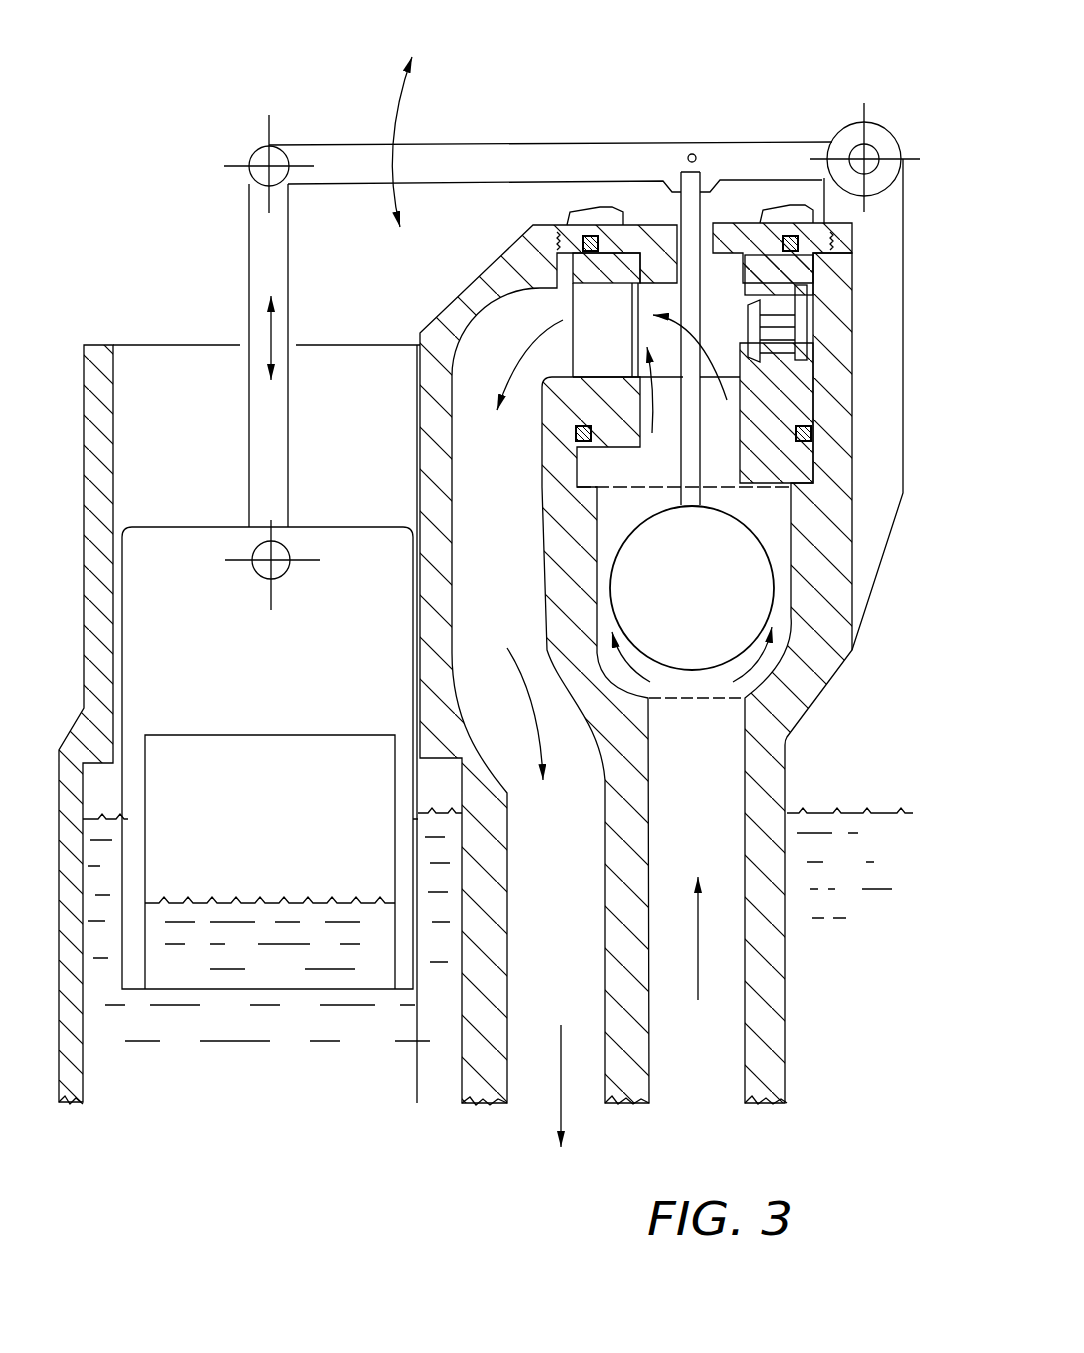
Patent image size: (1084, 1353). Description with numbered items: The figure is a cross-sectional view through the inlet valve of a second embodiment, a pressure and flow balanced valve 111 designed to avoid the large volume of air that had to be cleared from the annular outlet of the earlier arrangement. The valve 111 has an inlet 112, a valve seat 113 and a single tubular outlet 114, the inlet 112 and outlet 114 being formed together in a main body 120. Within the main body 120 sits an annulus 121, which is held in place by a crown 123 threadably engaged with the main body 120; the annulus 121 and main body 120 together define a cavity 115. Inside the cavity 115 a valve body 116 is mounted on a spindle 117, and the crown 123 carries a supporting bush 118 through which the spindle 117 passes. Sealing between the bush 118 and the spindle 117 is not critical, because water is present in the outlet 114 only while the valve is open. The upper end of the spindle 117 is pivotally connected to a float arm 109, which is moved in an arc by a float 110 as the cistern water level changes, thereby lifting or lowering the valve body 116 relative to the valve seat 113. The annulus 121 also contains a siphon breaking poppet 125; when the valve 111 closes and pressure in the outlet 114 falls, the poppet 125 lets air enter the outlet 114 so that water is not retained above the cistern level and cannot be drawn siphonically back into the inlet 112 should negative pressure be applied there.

The float arm 109 is at (467, 160).
The float 110 is at (168, 568).
The pressure and flow balanced valve 111 is at (605, 120).
The inlet 112 is at (717, 1025).
The valve seat 113 is at (737, 465).
The tubular outlet 114 is at (490, 430).
The cavity 115 is at (620, 510).
The valve body 116 is at (650, 571).
The spindle 117 is at (693, 212).
The supporting bush 118 is at (677, 283).
The main body 120 is at (810, 705).
The annulus 121 is at (790, 392).
The crown 123 is at (733, 245).
The siphon breaking poppet 125 is at (817, 325).